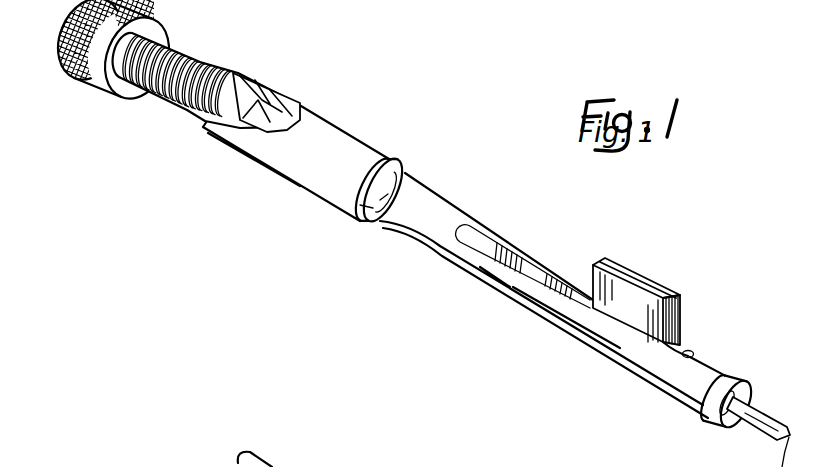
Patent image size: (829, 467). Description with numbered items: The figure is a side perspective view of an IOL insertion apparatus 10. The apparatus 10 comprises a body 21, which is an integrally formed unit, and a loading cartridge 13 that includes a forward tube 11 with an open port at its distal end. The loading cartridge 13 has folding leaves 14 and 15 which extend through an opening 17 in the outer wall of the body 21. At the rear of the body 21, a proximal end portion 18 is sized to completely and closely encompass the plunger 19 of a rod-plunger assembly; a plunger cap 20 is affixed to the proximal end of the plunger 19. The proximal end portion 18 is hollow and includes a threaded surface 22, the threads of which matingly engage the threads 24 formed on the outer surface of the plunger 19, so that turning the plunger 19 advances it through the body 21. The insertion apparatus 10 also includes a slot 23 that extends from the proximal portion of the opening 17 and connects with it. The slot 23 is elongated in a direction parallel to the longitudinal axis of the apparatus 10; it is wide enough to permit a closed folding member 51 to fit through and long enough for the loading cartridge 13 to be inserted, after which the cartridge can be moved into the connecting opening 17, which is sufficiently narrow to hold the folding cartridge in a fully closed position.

The IOL insertion apparatus 10 is at (460, 183).
The forward tube 11 is at (752, 410).
The loading cartridge 13 is at (694, 373).
The folding leaf 14 is at (663, 284).
The folding leaf 15 is at (635, 280).
The opening 17 is at (720, 320).
The proximal end portion 18 is at (323, 187).
The plunger 19 is at (201, 113).
The plunger cap 20 is at (78, 78).
The body 21 is at (544, 289).
The threaded surface 22 is at (294, 100).
The slot 23 is at (526, 262).
The threads 24 is at (208, 72).
The folding member 51 is at (349, 450).